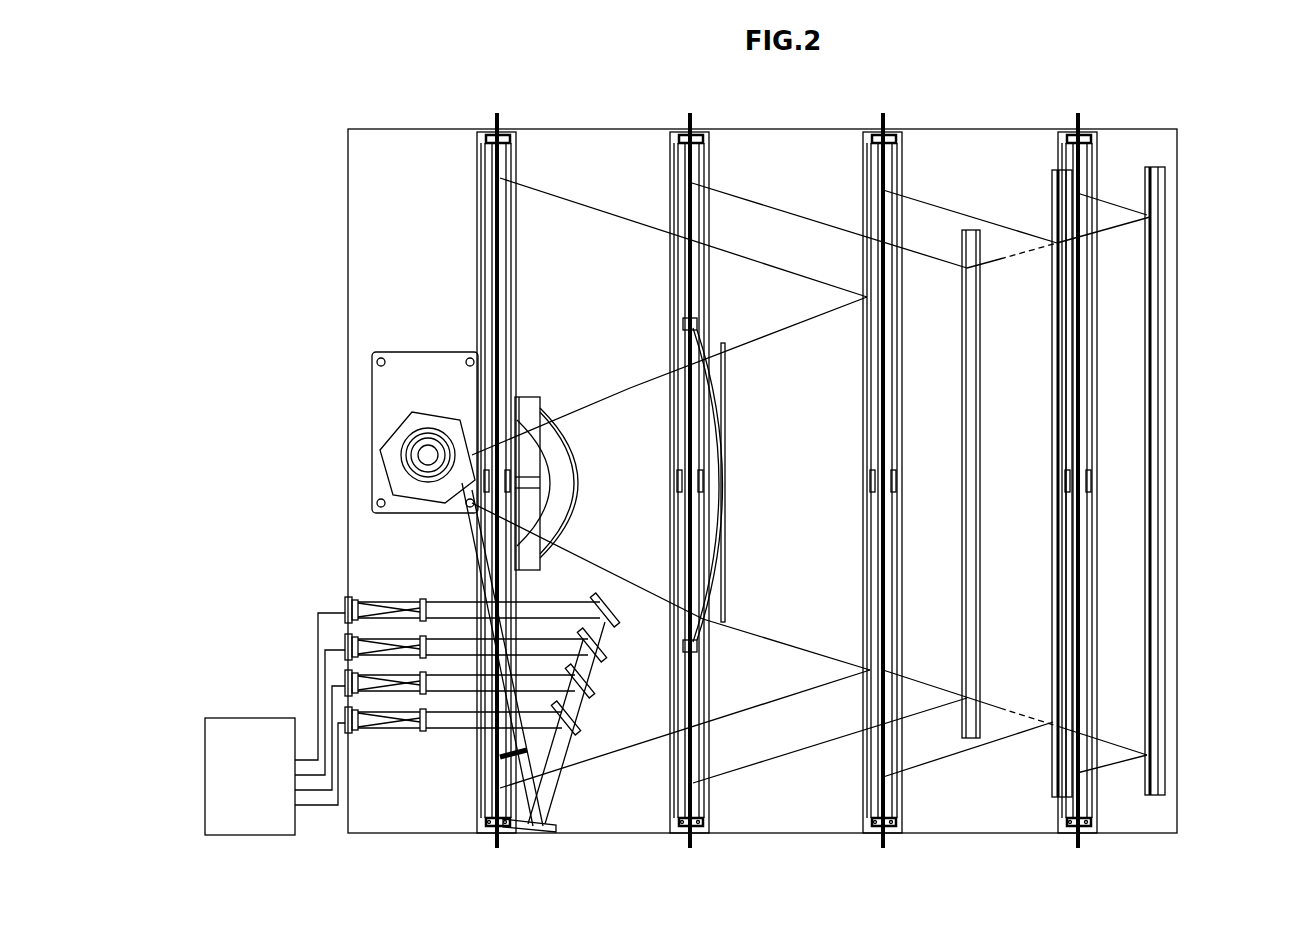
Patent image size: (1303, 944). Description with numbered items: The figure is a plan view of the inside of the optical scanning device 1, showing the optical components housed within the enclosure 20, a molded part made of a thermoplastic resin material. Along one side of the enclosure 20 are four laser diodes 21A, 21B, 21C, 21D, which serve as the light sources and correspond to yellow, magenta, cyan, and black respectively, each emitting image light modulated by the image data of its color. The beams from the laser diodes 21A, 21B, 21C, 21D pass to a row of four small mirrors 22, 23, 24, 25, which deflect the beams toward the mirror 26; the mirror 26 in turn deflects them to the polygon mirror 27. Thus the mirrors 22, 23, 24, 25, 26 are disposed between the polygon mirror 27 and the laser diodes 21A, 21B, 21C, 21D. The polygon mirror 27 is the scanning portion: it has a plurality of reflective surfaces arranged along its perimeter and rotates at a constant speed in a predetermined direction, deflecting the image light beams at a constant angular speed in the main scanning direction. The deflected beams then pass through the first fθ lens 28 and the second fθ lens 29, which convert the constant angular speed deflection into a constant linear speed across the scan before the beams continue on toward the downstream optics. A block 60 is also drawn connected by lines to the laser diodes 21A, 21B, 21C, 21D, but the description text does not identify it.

The optical scanning device 1 is at (1210, 300).
The enclosure 20 is at (1180, 129).
The laser diode 21A is at (345, 715).
The laser diode 21B is at (345, 678).
The laser diode 21C is at (345, 642).
The laser diode 21D is at (345, 605).
The mirror 22 is at (580, 731).
The mirror 23 is at (592, 694).
The mirror 24 is at (606, 658).
The mirror 25 is at (618, 624).
The mirror 26 is at (560, 823).
The polygon mirror 27 is at (390, 432).
The first fθ lens 28 is at (566, 484).
The second fθ lens 29 is at (721, 484).
The controller 60 is at (210, 835).